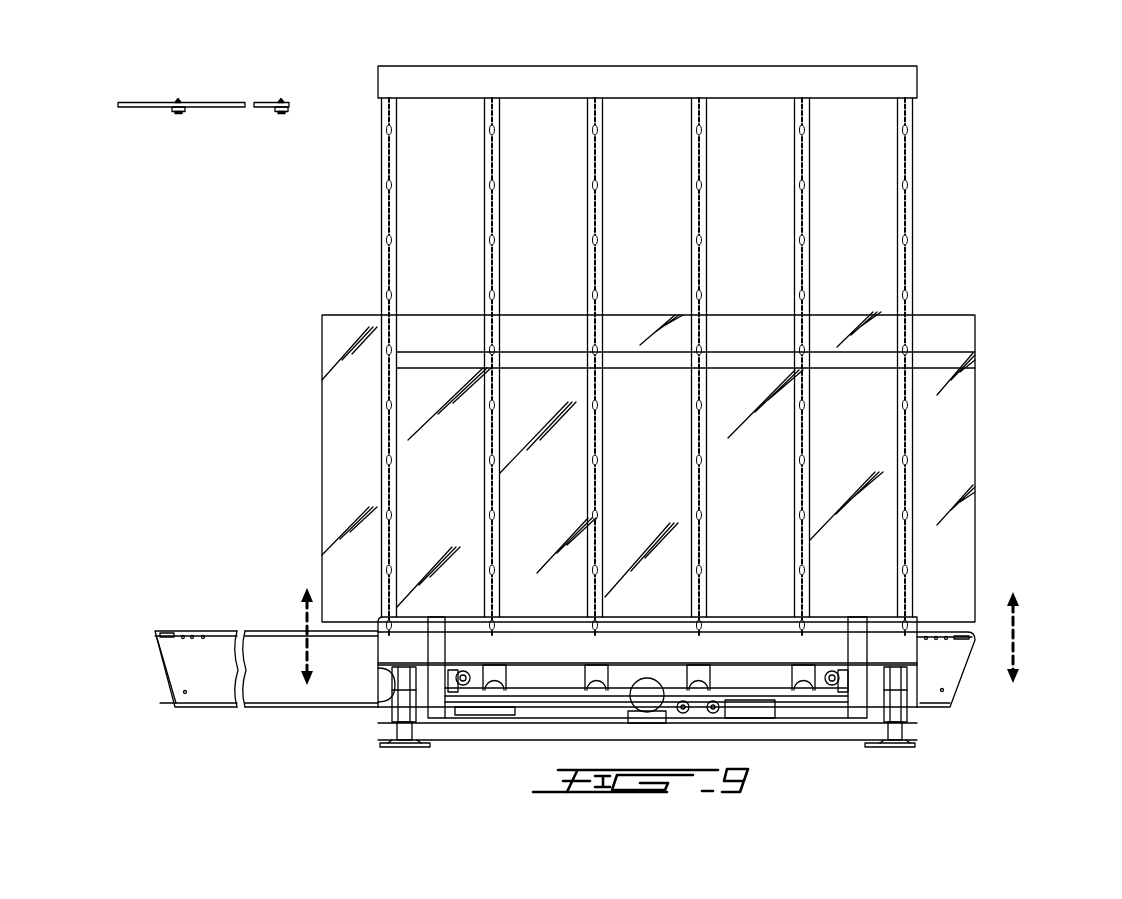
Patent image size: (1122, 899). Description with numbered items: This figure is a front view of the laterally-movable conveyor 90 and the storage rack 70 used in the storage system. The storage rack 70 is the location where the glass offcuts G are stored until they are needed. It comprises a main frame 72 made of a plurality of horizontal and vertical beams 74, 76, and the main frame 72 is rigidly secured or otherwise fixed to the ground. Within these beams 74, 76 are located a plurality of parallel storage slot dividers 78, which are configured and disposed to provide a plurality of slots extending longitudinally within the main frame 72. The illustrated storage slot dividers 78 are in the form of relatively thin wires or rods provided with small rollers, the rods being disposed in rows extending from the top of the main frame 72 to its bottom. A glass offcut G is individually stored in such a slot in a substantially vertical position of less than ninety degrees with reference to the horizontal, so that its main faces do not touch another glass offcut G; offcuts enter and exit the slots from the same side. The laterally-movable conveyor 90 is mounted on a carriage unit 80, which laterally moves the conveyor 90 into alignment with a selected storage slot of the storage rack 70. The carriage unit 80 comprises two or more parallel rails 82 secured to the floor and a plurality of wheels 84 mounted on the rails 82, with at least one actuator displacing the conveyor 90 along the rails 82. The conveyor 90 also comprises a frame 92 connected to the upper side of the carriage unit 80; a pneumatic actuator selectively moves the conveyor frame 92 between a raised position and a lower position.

The storage rack 70 is at (322, 90).
The main frame 72 is at (978, 104).
The beams 74 is at (386, 148).
The beams 76 is at (512, 82).
The storage slot dividers 78 is at (492, 233).
The carriage unit 80 is at (370, 725).
The rails 82 is at (405, 743).
The wheels 84 is at (405, 700).
The laterally-movable glass offcut conveyor 90 is at (189, 722).
The frame 92 is at (213, 680).
The glass offcuts G is at (350, 470).